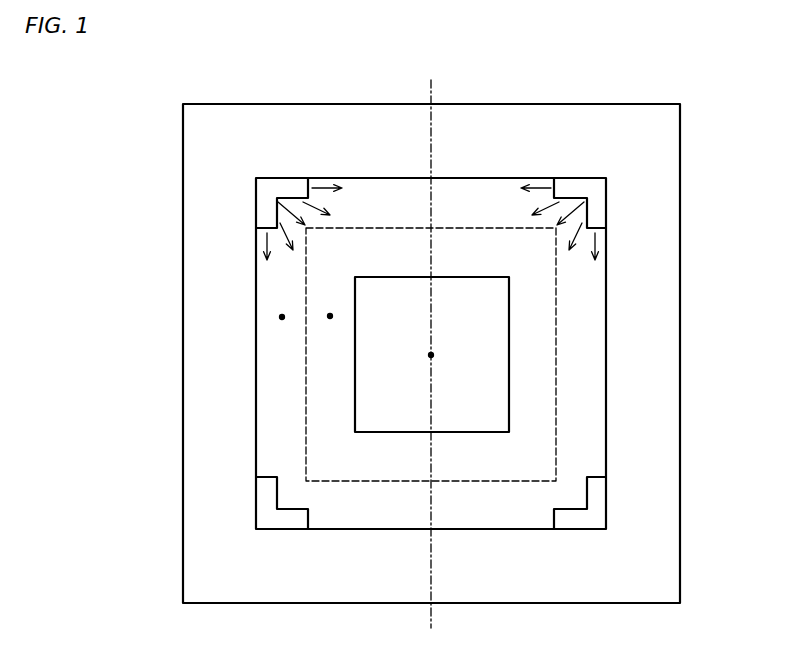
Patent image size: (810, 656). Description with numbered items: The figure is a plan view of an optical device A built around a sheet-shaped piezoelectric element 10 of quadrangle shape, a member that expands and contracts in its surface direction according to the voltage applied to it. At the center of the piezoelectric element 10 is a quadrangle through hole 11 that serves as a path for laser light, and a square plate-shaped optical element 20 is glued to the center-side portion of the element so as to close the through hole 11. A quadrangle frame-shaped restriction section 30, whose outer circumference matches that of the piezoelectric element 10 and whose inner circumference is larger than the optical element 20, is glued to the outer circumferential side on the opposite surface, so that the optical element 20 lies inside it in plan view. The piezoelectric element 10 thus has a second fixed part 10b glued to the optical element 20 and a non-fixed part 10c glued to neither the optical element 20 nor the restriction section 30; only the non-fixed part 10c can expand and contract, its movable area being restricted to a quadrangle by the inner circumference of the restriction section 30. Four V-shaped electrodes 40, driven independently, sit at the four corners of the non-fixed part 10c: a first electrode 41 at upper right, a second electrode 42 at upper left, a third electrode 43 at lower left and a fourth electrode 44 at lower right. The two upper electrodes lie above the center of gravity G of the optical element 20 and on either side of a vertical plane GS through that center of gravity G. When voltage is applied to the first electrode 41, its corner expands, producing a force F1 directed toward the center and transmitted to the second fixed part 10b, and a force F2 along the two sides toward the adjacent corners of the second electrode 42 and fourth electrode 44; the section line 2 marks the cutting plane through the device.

The piezoelectric element 10 is at (459, 518).
The second fixed part 10b is at (332, 316).
The non-fixed part 10c is at (280, 317).
The through hole 11 is at (353, 424).
The optical element 20 is at (558, 417).
The restriction section 30 is at (680, 568).
The electrodes 40 is at (450, 355).
The first electrode 41 is at (571, 187).
The second electrode 42 is at (281, 187).
The third electrode 43 is at (277, 520).
The fourth electrode 44 is at (584, 518).
The center of gravity G is at (433, 355).
The vertical plane GS is at (433, 455).
The force F1 is at (431, 229).
The force F2 is at (433, 236).
The optical device A is at (710, 98).
The section line 2- 2 is at (165, 355).